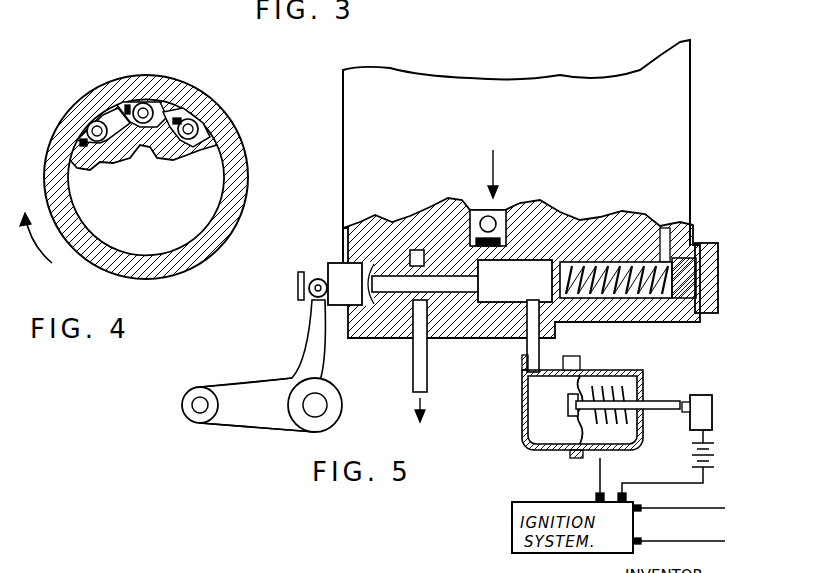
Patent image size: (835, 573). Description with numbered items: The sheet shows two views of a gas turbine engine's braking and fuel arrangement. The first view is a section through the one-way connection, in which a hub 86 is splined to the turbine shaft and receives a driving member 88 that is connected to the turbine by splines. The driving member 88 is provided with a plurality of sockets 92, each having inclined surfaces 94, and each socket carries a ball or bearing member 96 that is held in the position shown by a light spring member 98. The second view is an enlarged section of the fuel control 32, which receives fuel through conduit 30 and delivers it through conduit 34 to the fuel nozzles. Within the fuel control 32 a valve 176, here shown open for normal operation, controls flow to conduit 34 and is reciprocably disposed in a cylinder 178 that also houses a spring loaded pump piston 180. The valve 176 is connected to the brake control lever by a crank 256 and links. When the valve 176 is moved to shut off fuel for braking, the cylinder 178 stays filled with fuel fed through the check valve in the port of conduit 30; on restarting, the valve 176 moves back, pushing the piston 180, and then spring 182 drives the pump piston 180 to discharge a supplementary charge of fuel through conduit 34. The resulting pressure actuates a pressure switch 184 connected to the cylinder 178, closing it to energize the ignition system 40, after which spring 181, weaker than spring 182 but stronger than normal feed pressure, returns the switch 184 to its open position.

In FIG. 4, the hub 86 is at (242, 172).
In FIG. 4, the driving member 88 is at (160, 229).
In FIG. 4, the sockets 92 is at (118, 108).
In FIG. 4, the inclined surfaces 94 is at (137, 133).
In FIG. 4, the ball or bearing member 96 is at (97, 122).
In FIG. 4, the light spring member 98 is at (82, 142).
In FIG. 5, the fuel control 32 is at (584, 62).
In FIG. 5, the conduit 30 is at (488, 212).
In FIG. 5, the conduit 34 is at (428, 372).
In FIG. 5, the ignition system 40 is at (564, 405).
In FIG. 5, the valve 176 is at (346, 268).
In FIG. 5, the cylinder 178 is at (527, 262).
In FIG. 5, the pump piston 180 is at (592, 300).
In FIG. 5, the spring 181 is at (606, 388).
In FIG. 5, the spring 182 is at (600, 262).
In FIG. 5, the pressure switch 184 is at (700, 398).
In FIG. 5, the crank 256 is at (255, 426).